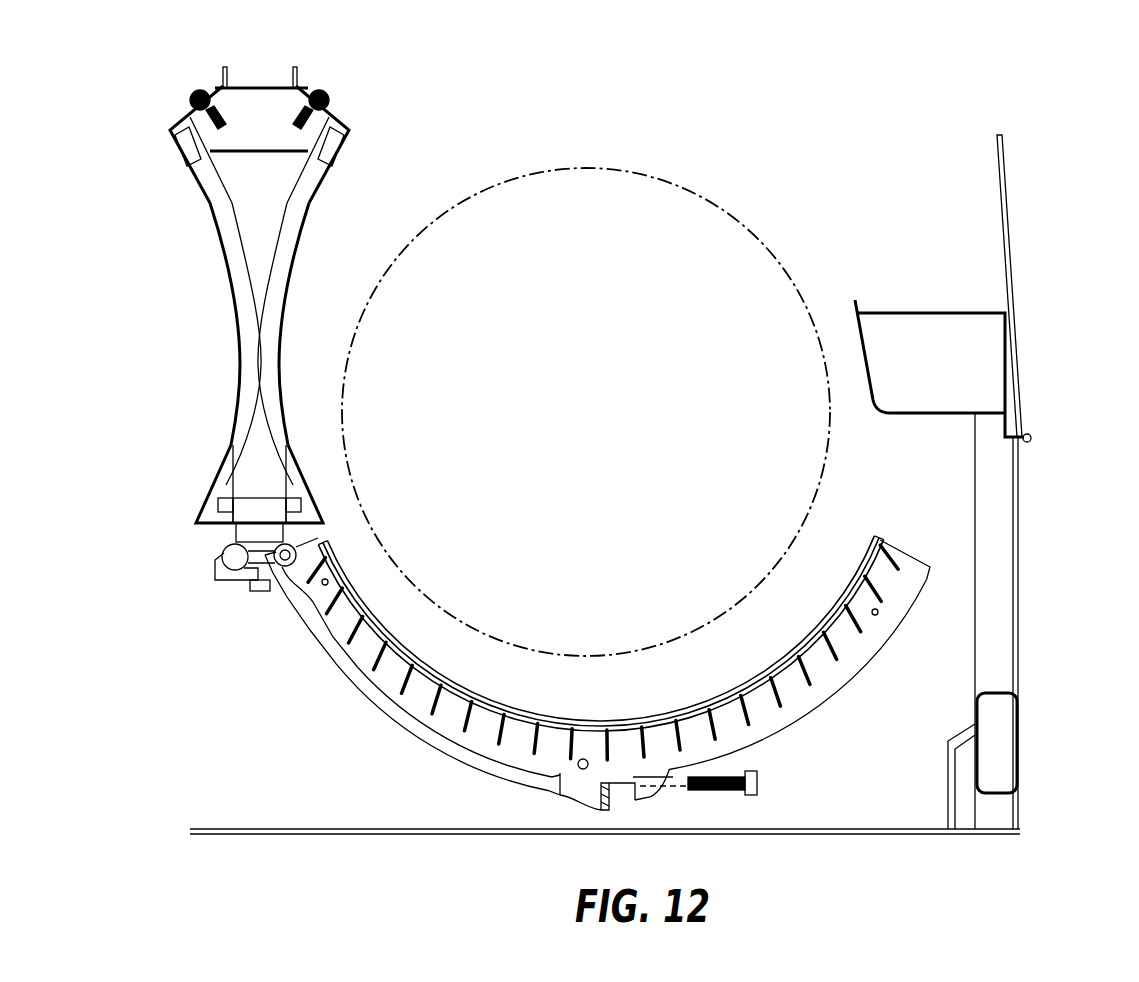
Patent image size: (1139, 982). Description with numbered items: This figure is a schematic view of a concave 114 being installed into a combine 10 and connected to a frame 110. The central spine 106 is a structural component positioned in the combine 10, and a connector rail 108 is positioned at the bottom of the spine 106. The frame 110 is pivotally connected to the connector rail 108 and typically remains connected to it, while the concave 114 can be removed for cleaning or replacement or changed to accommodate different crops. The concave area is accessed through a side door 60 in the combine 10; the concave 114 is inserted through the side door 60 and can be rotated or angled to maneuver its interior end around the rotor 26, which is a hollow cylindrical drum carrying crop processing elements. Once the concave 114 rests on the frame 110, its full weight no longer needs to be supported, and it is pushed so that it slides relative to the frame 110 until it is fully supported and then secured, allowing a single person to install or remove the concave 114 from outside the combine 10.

The combine 10 is at (1008, 96).
The rotor 26 is at (706, 190).
The side door 60 is at (1010, 200).
The central spine 106 is at (360, 100).
The connector rail 108 is at (262, 523).
The frame 110 is at (328, 670).
The concave 114 is at (812, 613).